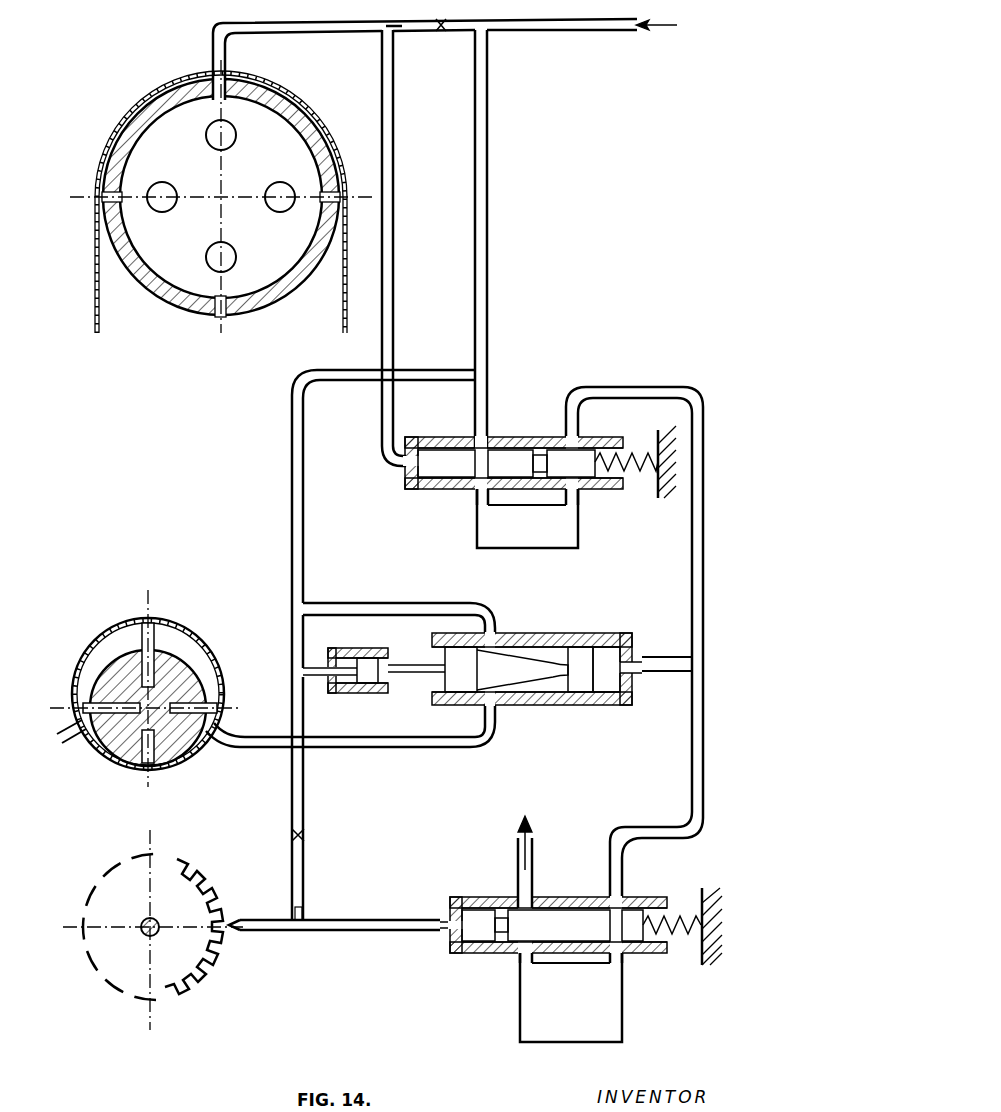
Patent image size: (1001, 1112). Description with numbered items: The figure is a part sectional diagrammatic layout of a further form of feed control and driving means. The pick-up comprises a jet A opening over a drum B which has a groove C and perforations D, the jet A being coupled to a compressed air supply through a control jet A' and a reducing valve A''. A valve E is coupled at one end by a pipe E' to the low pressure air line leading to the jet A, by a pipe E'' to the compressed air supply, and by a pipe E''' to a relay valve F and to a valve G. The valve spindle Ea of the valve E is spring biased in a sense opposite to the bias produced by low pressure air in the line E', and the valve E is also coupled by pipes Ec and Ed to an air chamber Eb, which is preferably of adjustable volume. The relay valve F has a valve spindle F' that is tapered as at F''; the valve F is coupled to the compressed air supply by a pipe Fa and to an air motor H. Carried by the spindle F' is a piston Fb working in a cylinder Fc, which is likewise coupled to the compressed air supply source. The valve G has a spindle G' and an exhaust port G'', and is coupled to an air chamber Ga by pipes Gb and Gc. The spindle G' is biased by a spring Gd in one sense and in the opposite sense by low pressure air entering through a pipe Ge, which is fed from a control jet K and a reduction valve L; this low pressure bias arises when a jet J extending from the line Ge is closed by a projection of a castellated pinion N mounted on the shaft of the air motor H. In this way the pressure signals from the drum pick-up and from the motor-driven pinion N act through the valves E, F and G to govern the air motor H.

The jet A is at (422, 59).
The control jet A' is at (403, 42).
The reducing valve A'' is at (451, 38).
The drum B is at (343, 177).
The groove C is at (306, 118).
The perforations D is at (120, 128).
The valve E is at (520, 476).
The pipe E' is at (401, 248).
The pipe E'' is at (504, 239).
The pipe E''' is at (634, 618).
The valve spindle Ea is at (511, 462).
The air chamber Eb is at (505, 535).
The pipe Ec is at (483, 495).
The pipe Ed is at (576, 497).
The relay valve F is at (511, 639).
The valve spindle F' is at (630, 697).
The tapered portion F'' is at (522, 698).
The pipe Fa is at (358, 608).
The piston Fb is at (352, 690).
The cylinder Fc is at (378, 690).
The valve G is at (557, 894).
The spindle G' is at (654, 898).
The exhaust port G'' is at (497, 862).
The air chamber Ga is at (553, 1026).
The pipe Gb is at (518, 956).
The pipe Gc is at (613, 954).
The spring Gd is at (694, 935).
The pipe Ge is at (378, 940).
The air motor H is at (196, 634).
The jet J is at (236, 936).
The control jet K is at (308, 910).
The reduction valve L is at (305, 838).
The castellated pinion N is at (192, 956).